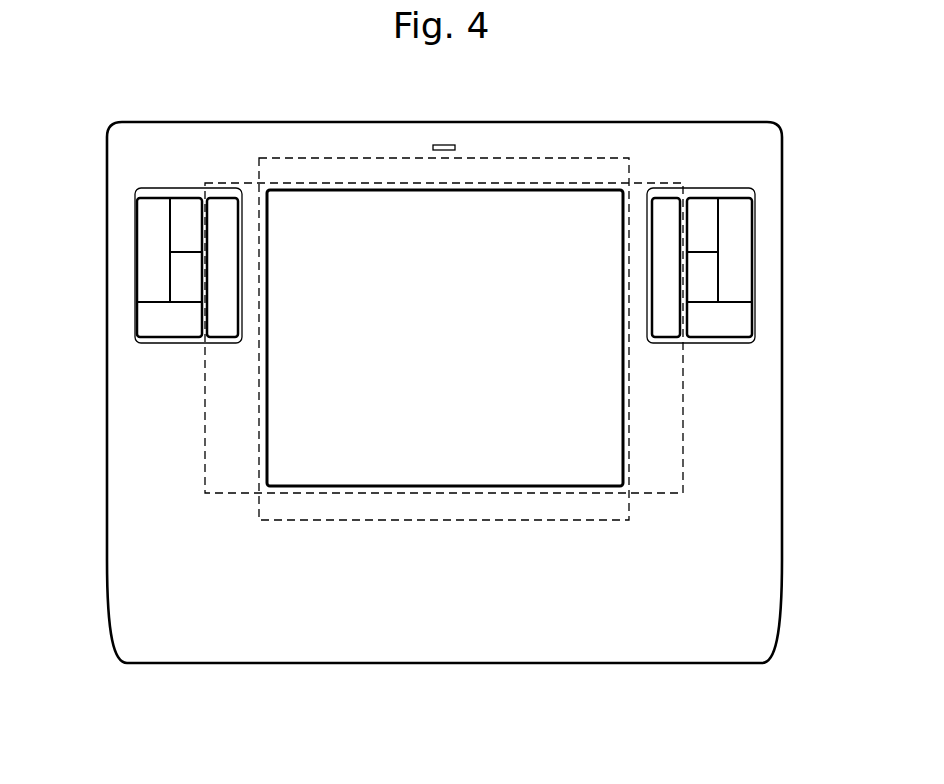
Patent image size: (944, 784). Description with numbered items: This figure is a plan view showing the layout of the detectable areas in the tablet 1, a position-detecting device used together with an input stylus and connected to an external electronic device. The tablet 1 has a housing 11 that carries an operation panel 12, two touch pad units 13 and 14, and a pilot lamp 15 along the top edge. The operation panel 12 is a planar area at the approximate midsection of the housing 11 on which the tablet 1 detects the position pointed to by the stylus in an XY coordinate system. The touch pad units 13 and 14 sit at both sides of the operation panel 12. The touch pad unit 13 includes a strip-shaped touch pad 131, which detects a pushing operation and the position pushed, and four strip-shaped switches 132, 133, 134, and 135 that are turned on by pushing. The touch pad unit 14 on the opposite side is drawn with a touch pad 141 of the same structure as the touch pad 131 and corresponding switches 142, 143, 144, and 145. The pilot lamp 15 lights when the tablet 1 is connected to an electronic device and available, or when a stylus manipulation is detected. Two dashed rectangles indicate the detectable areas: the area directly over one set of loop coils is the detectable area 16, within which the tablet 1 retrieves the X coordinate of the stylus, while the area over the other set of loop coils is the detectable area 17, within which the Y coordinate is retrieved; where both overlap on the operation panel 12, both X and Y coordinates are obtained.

The tablet 1 is at (786, 95).
The housing 11 is at (573, 122).
The operation panel 12 is at (623, 452).
The touch pad unit 13 is at (773, 222).
The touch pad 131 is at (660, 328).
The switch 132 is at (700, 208).
The switch 133 is at (705, 284).
The switch 134 is at (750, 248).
The switch 135 is at (750, 320).
The touch pad unit 14 is at (116, 222).
The touch pad 141 is at (233, 328).
The left upper button 142 is at (188, 208).
The left middle button 143 is at (183, 284).
The left large button 144 is at (140, 248).
The left lower button 145 is at (140, 320).
The pilot lamp 15 is at (446, 143).
The detectable area 16 is at (452, 521).
The detectable area 17 is at (683, 416).